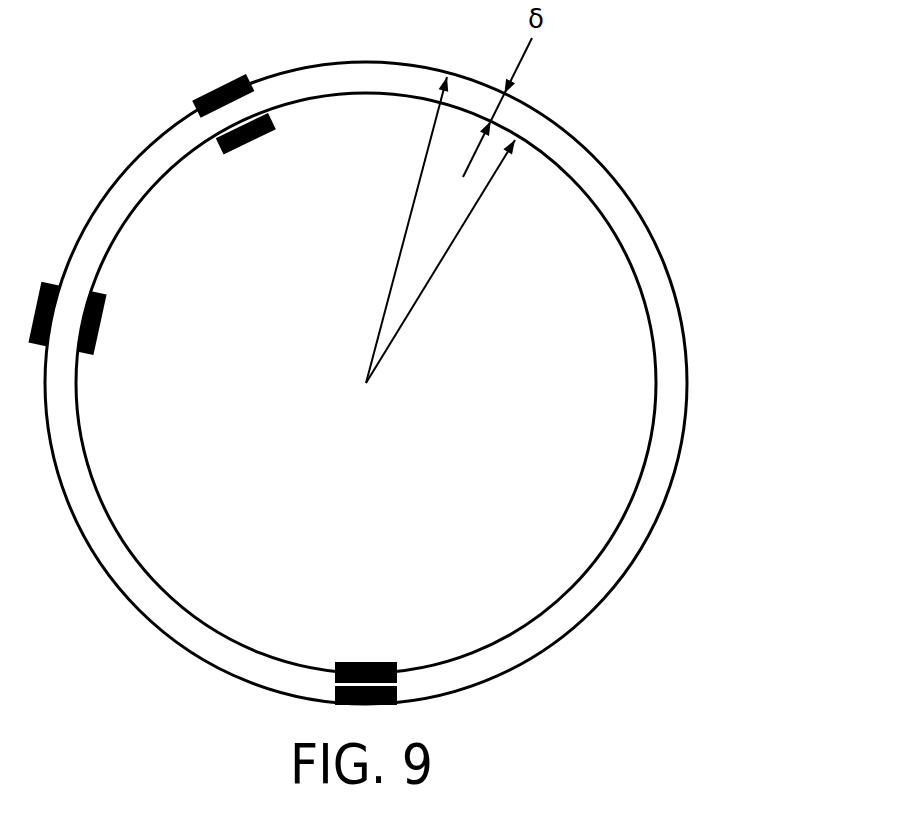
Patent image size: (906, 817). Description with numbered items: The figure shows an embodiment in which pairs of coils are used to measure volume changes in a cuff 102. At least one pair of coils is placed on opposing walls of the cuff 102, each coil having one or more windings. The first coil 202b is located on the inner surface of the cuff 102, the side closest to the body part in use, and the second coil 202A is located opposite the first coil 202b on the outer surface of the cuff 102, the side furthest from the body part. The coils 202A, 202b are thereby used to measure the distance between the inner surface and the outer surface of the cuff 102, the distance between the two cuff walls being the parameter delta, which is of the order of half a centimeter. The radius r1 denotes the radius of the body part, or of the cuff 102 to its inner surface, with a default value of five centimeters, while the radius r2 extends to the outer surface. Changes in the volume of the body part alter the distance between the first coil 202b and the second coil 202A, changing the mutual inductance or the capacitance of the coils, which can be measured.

The cuff 102 is at (118, 174).
The second coil 202A is at (221, 86).
The first coil 202b is at (248, 148).
The radius of the cuff to the inner surface r1 is at (440, 261).
The outer radius r2 is at (405, 230).